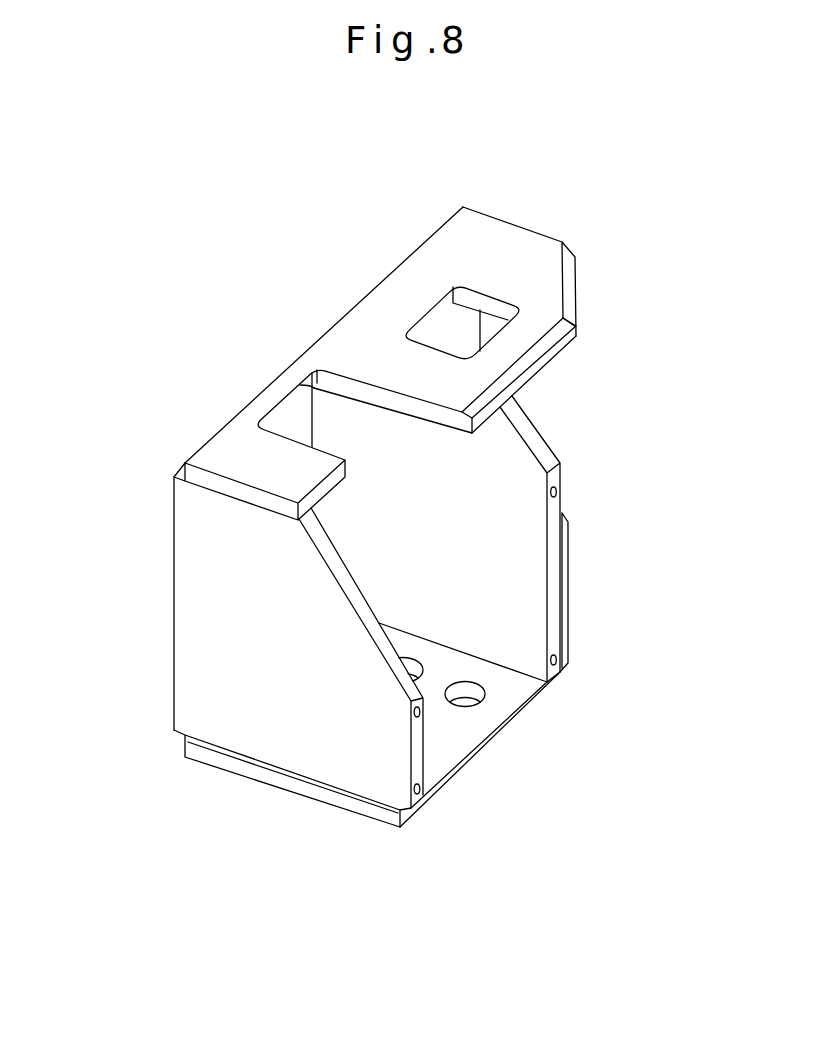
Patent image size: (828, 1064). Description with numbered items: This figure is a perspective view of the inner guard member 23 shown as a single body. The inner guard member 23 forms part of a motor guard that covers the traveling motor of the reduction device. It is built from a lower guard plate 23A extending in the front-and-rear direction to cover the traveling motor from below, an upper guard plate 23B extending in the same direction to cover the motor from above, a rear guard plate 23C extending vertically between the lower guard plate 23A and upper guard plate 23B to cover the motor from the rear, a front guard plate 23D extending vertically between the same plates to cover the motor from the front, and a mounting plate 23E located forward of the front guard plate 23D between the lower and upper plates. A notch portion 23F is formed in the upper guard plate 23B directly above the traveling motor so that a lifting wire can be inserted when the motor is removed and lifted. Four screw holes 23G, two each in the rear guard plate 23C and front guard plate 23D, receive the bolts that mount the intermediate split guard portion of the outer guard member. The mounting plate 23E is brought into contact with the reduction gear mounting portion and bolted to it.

The inner guard member 23 is at (342, 350).
The lower guard plate 23A is at (470, 755).
The upper guard plate 23B is at (402, 293).
The rear guard plate 23C is at (203, 634).
The front guard plate 23D is at (555, 565).
The mounting plate 23E is at (460, 333).
The notch portion 23F is at (278, 440).
The screw holes 23G is at (560, 492).